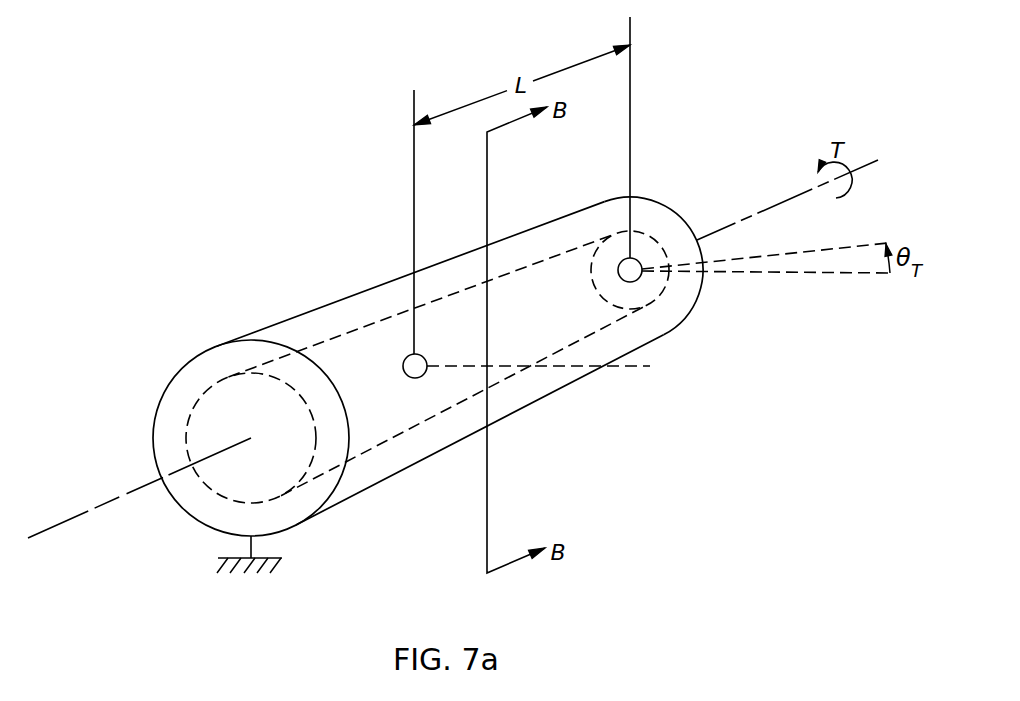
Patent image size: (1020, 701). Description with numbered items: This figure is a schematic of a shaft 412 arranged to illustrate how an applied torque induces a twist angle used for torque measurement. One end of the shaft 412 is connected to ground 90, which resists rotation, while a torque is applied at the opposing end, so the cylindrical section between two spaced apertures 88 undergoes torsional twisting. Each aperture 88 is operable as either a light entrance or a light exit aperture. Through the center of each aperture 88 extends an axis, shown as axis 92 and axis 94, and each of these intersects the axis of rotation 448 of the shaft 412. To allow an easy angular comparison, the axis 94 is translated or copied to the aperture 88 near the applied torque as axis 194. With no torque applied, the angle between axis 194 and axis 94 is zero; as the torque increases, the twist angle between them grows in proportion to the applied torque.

The shaft 412 is at (193, 378).
The axis of rotation 448 is at (70, 520).
The ground 90 is at (265, 566).
The aperture 88 is at (413, 378).
The aperture axis 92 is at (628, 367).
The aperture axis 94 is at (817, 247).
The translated axis 194 is at (807, 274).